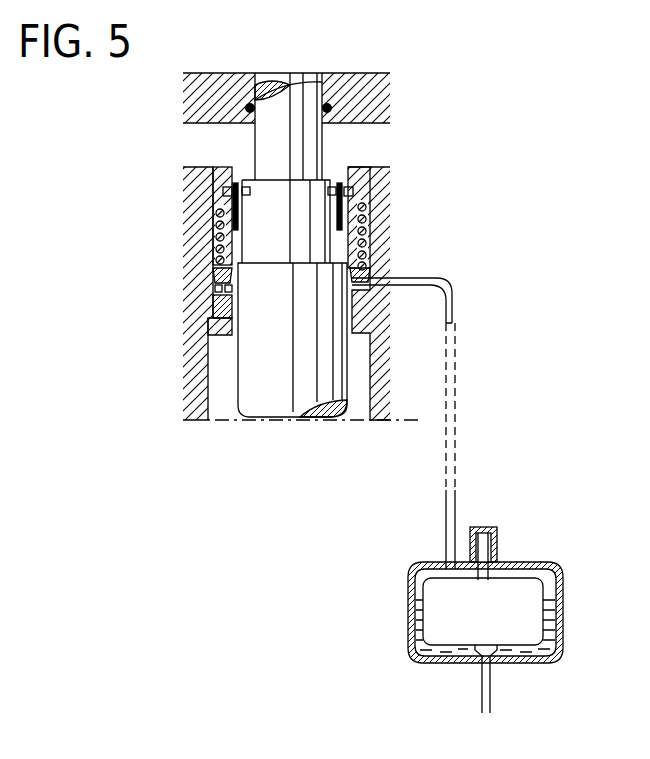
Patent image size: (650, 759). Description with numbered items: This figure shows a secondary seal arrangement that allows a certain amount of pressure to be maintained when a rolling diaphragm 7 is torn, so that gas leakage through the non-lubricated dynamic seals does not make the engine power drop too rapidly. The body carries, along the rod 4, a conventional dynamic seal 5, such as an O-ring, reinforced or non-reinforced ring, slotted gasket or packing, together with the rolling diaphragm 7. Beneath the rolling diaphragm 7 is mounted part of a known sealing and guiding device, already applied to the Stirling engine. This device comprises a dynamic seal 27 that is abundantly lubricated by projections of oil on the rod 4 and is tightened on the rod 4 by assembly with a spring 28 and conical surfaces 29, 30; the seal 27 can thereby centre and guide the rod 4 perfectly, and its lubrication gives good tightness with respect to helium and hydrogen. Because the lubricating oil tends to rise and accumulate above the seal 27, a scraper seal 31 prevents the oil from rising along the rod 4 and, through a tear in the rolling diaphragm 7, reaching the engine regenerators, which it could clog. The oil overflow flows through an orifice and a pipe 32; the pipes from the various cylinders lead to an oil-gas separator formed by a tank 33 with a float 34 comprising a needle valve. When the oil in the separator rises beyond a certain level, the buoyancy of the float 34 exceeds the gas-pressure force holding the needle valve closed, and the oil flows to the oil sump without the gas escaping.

The rod 4 is at (253, 385).
The dynamic seal 5 is at (327, 105).
The rolling diaphragm 7 is at (247, 215).
The dynamic seal 27 is at (214, 313).
The spring 28 is at (219, 230).
The conical surface 29 is at (208, 322).
The conical surface 30 is at (215, 298).
The scraper seal 31 is at (385, 270).
The pipe 32 is at (456, 303).
The tank 33 is at (550, 560).
The float 34 is at (443, 625).